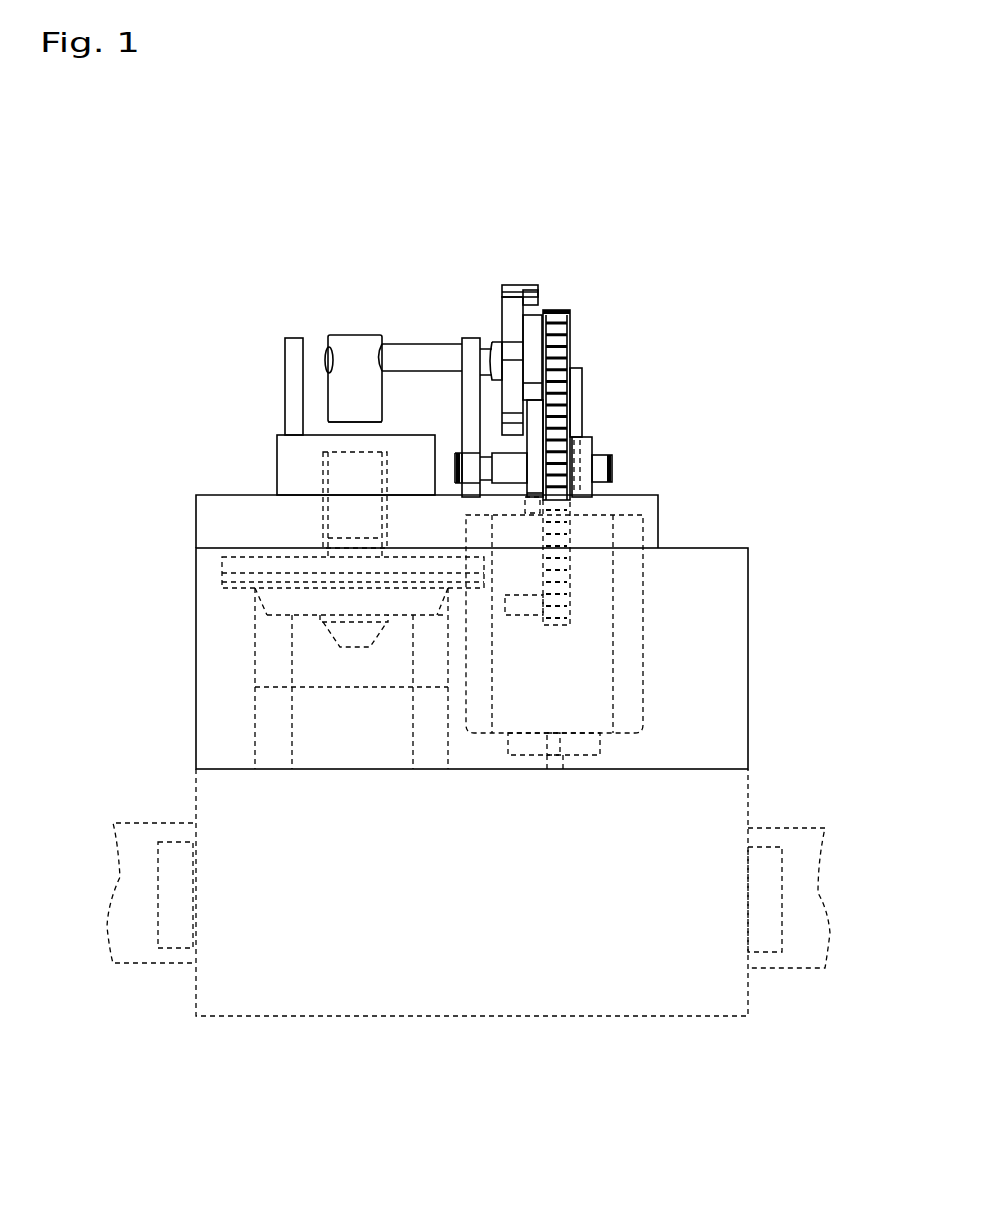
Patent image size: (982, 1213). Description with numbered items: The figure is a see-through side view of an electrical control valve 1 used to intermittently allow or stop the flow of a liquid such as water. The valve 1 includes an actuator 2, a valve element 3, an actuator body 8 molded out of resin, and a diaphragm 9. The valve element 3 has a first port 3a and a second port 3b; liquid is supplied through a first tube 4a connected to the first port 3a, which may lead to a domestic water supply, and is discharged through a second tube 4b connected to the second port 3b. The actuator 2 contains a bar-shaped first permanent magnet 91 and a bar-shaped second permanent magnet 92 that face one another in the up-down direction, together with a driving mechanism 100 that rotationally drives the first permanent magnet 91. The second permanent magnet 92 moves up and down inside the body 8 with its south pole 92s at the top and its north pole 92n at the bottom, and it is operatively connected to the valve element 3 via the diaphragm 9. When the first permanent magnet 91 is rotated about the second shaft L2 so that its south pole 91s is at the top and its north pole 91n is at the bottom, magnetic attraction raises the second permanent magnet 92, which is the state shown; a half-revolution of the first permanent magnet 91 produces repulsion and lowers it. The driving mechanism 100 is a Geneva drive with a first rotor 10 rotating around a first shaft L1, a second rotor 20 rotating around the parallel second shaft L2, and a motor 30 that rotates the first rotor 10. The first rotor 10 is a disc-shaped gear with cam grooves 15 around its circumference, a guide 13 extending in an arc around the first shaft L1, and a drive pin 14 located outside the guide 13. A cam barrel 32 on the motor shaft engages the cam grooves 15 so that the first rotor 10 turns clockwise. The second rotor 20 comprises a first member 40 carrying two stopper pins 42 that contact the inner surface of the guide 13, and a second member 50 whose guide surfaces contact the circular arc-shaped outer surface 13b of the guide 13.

The valve 1 is at (718, 476).
The actuator 2 is at (441, 302).
The valve element 3 is at (460, 902).
The first port 3a is at (173, 932).
The second port 3b is at (758, 942).
The first tube 4a is at (122, 948).
The second tube 4b is at (805, 960).
The actuator body 8 is at (207, 517).
The diaphragm 9 is at (436, 660).
The first rotor 10 is at (590, 427).
The guide 13 is at (537, 432).
The circular arc-shaped outer surface 13b is at (533, 457).
The drive pin 14 is at (528, 607).
The cam grooves 15 is at (572, 357).
The second rotor 20 is at (506, 306).
The motor 30 is at (592, 657).
The cam barrel 32 is at (575, 383).
The first member 40 is at (508, 285).
The stopper pins 42 is at (535, 298).
The second member 50 is at (533, 328).
The first permanent magnet 91 is at (280, 346).
The south pole of first permanent magnet 91s is at (340, 335).
The north pole of first permanent magnet 91n is at (355, 420).
The second permanent magnet 92 is at (305, 469).
The south pole of second permanent magnet 92s is at (352, 448).
The north pole of second permanent magnet 92n is at (352, 533).
The driving mechanism 100 is at (556, 401).
The first shaft L1 is at (603, 468).
The second shaft L2 is at (435, 358).